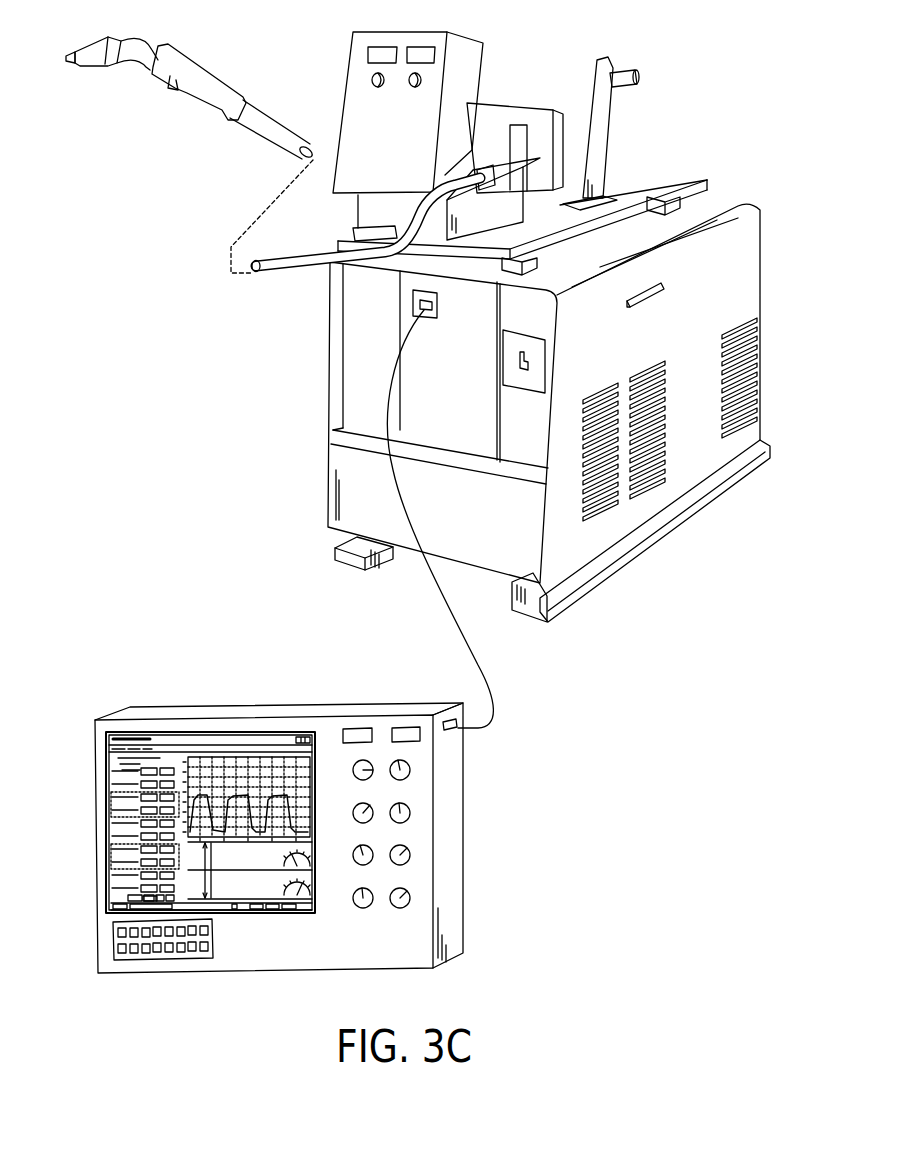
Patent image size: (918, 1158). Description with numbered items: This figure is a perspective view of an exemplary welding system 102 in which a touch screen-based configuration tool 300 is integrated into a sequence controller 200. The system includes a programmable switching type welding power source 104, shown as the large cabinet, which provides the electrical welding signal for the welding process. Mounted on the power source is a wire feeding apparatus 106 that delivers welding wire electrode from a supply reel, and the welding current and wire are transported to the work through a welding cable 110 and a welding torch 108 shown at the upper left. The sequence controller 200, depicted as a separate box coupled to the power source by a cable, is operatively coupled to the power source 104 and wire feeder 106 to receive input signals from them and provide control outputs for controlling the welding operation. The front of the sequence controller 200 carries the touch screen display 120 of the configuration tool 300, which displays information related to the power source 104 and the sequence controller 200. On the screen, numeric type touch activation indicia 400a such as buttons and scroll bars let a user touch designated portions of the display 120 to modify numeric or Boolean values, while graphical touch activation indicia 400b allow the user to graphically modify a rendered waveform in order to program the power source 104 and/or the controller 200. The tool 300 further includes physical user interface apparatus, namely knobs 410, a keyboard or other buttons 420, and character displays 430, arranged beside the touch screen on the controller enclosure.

The welding system 102 is at (700, 52).
The welding power source 104 is at (332, 358).
The wire feeding apparatus 106 is at (352, 33).
The welding torch 108 is at (223, 82).
The welding cable 110 is at (270, 116).
The touch screen display 120 is at (105, 753).
The sequence controller 200 is at (444, 828).
The touch screen-based welding system configuration tool 300 is at (339, 699).
The numeric type touch activation indicia 400a is at (117, 880).
The graphical touch activation indicia 400b is at (213, 791).
The knobs 410 is at (413, 866).
The keyboard or other buttons 420 is at (212, 946).
The character displays 430 is at (411, 747).